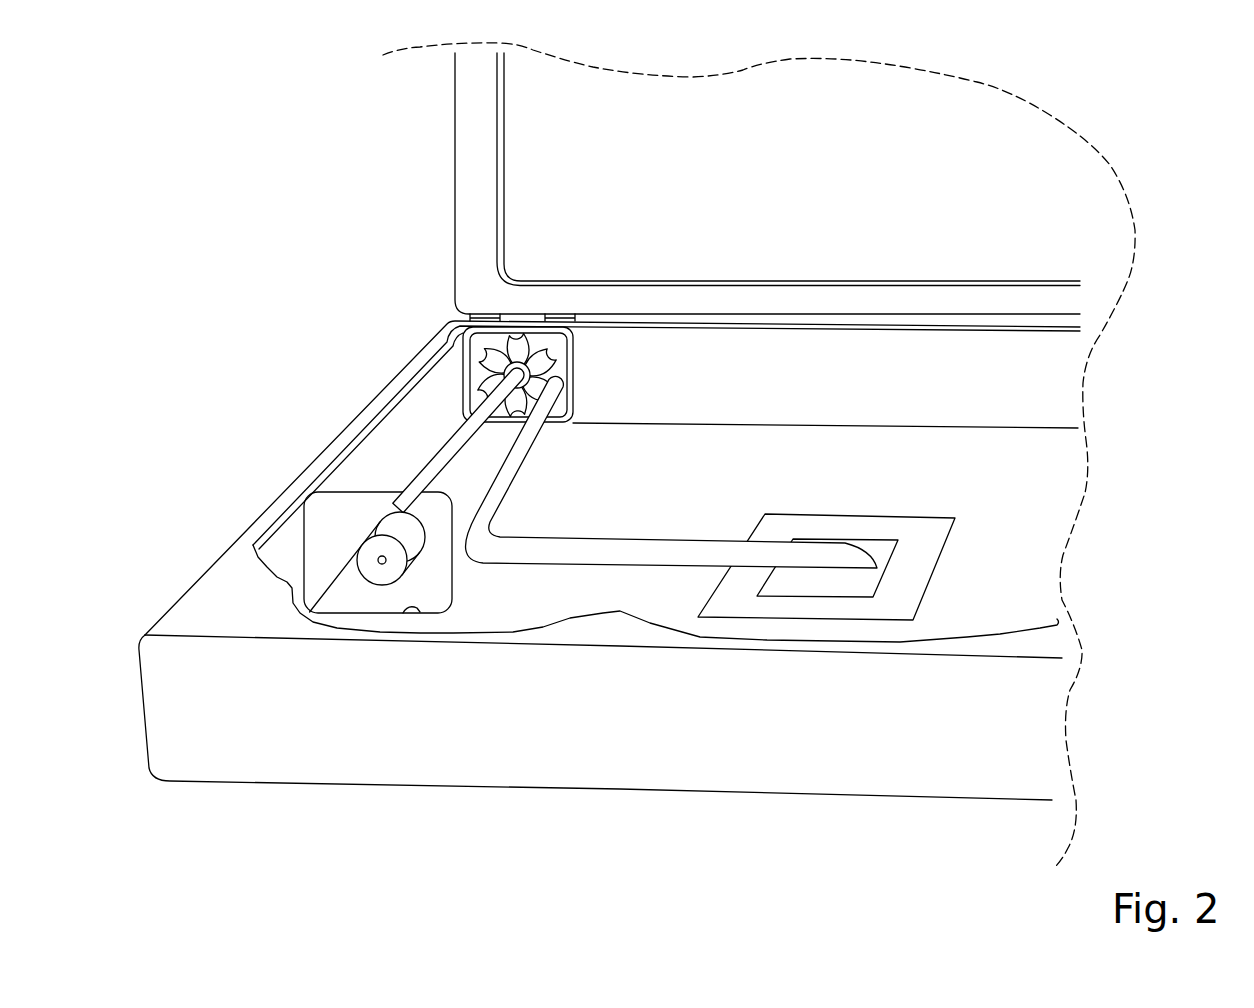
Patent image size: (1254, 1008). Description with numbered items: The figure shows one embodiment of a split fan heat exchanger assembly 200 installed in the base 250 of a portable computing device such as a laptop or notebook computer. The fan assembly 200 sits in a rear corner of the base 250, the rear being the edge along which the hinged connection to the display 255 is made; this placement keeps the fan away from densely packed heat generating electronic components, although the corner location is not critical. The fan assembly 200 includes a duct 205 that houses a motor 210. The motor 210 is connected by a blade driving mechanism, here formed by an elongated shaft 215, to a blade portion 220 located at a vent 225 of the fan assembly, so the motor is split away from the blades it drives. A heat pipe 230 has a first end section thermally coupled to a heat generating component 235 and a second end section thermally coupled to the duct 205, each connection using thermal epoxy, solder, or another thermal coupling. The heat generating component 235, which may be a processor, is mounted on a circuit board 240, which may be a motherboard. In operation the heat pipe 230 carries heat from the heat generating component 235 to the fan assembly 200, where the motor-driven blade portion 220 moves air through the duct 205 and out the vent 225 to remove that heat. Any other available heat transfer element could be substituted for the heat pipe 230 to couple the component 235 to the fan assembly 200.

The split fan heat exchanger assembly 200 is at (532, 465).
The duct 205 is at (432, 613).
The motor 210 is at (390, 528).
The elongated shaft 215 is at (460, 450).
The blade portion 220 is at (490, 352).
The vent 225 is at (575, 377).
The heat pipe 230 is at (650, 540).
The heat generating component 235 is at (860, 555).
The circuit board 240 is at (700, 604).
The base 250 is at (197, 780).
The display 255 is at (455, 252).